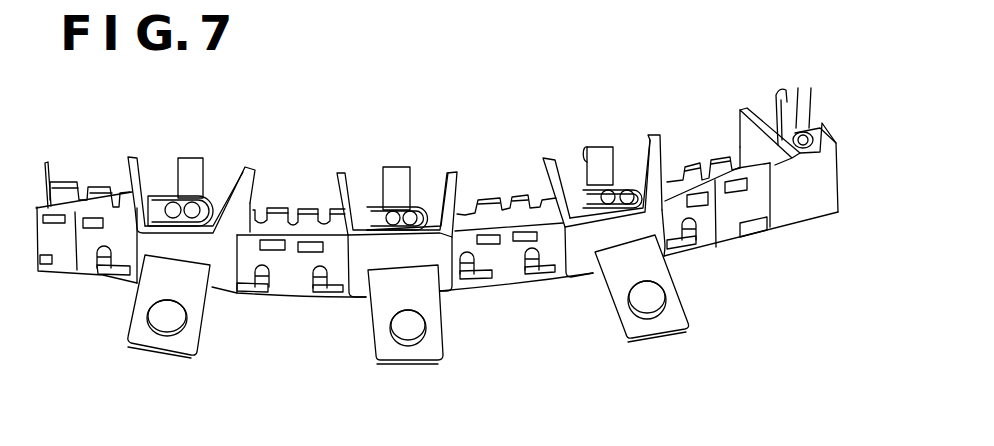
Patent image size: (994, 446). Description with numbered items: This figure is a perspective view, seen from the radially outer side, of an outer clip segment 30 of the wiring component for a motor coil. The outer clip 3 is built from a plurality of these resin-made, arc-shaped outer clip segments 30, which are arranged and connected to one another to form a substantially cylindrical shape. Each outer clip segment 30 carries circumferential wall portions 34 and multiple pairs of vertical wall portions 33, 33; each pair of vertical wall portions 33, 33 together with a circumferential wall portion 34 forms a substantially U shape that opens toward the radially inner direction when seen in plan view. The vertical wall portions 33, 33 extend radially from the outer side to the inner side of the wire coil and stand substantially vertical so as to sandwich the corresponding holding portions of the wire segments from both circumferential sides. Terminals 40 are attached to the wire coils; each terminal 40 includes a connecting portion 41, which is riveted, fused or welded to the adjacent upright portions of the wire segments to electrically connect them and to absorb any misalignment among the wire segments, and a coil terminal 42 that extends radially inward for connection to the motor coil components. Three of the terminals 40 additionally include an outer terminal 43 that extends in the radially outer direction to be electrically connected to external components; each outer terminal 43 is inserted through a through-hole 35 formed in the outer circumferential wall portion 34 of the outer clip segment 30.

The outer clip 3 is at (99, 291).
The outer clip segment 30 is at (229, 276).
The vertical wall portion 33 is at (343, 168).
The circumferential wall portion 34 is at (410, 243).
The through-hole 35 is at (633, 240).
The terminal 40 is at (397, 158).
The connecting portion 41 is at (638, 180).
The coil terminal 42 is at (600, 150).
The outer terminal 43 is at (182, 342).